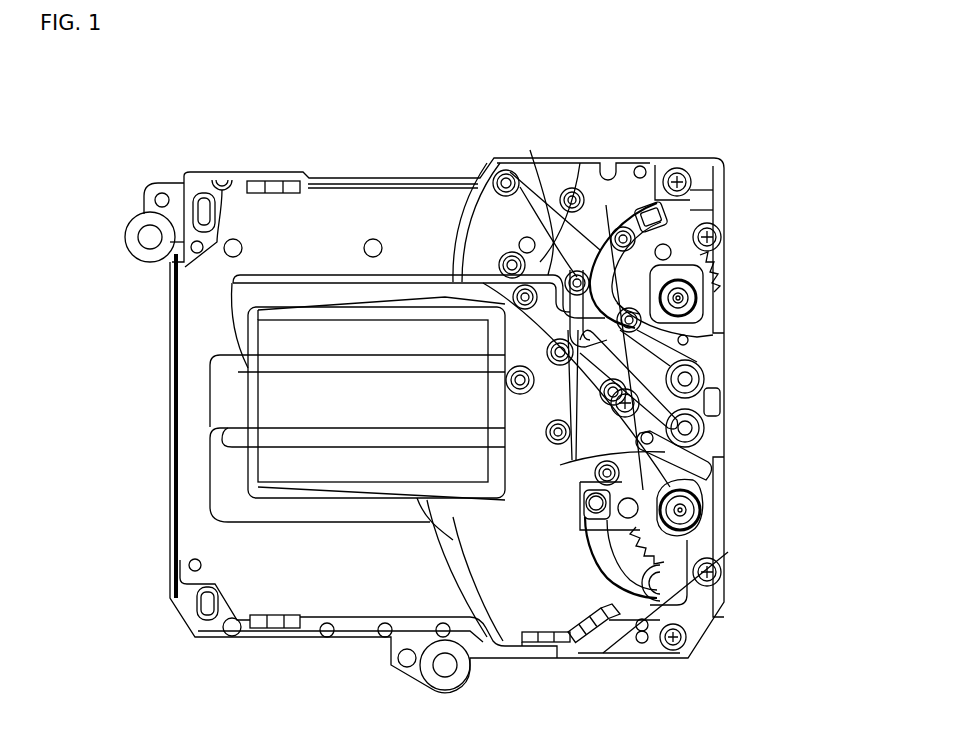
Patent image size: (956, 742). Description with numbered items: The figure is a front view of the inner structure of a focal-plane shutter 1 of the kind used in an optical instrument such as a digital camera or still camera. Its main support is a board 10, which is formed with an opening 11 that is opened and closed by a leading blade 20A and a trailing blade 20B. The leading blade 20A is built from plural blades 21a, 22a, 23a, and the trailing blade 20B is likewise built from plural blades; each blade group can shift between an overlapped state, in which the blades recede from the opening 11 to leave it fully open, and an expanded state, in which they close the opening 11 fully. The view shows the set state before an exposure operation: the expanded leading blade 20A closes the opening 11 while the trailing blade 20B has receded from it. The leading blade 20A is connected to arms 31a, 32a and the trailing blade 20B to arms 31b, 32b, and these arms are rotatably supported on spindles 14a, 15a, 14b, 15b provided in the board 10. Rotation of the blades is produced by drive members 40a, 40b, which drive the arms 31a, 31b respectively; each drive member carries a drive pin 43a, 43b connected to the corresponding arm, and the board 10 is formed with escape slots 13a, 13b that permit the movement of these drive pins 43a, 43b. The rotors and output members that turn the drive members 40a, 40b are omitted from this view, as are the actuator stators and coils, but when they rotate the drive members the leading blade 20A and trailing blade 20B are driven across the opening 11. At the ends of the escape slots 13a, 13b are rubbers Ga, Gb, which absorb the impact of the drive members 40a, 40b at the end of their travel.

The focal-plane shutter 1 is at (696, 128).
The board 10 is at (172, 296).
The opening 11 is at (318, 466).
The escape slot 13a is at (609, 620).
The escape slot 13b is at (606, 205).
The spindle 14a is at (682, 512).
The spindle 14b is at (681, 299).
The spindle 15a is at (704, 429).
The spindle 15b is at (704, 379).
The leading blade 20A is at (325, 398).
The trailing blade 20B is at (338, 186).
The blade 21a is at (243, 328).
The blade 22a is at (227, 385).
The blade 23a is at (227, 468).
The arm 31a is at (664, 462).
The arm 31b is at (540, 188).
The arm 32a is at (663, 413).
The arm 32b is at (581, 200).
The drive member 40a is at (708, 508).
The drive member 40b is at (708, 295).
The drive pin 43a is at (660, 588).
The drive pin 43b is at (663, 210).
The rubber Ga is at (645, 566).
The rubber Gb is at (695, 342).